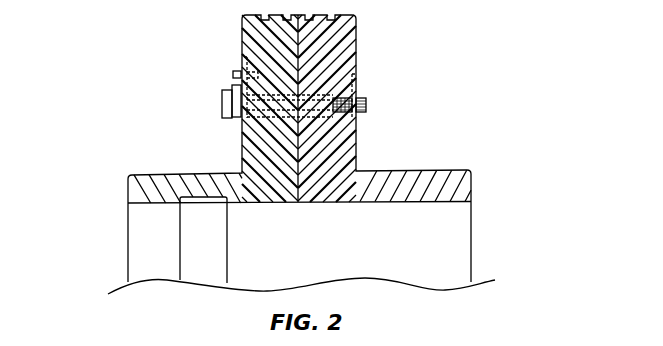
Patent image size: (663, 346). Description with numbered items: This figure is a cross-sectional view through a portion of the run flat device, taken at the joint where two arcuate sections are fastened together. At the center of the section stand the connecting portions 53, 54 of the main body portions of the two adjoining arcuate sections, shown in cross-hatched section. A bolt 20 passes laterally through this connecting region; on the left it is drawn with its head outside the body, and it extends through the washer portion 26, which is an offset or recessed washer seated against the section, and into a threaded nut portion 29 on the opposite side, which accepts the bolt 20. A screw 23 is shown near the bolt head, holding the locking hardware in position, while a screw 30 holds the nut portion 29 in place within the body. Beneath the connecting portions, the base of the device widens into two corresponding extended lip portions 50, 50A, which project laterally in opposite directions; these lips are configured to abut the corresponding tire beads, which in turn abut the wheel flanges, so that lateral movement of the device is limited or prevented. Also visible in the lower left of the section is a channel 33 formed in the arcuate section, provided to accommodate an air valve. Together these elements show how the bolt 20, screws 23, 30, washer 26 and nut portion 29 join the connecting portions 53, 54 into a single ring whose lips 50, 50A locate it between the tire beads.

The bolt 20 is at (228, 106).
The screw 23 is at (236, 76).
The washer 26 is at (238, 58).
The threaded nut portion 29 is at (358, 121).
The screw 30 is at (358, 88).
The channel 33 is at (200, 252).
The extended lip portion 50 is at (128, 184).
The extended lip portion 50A is at (442, 172).
The connecting portion 53 is at (250, 153).
The connecting portion 54 is at (345, 144).